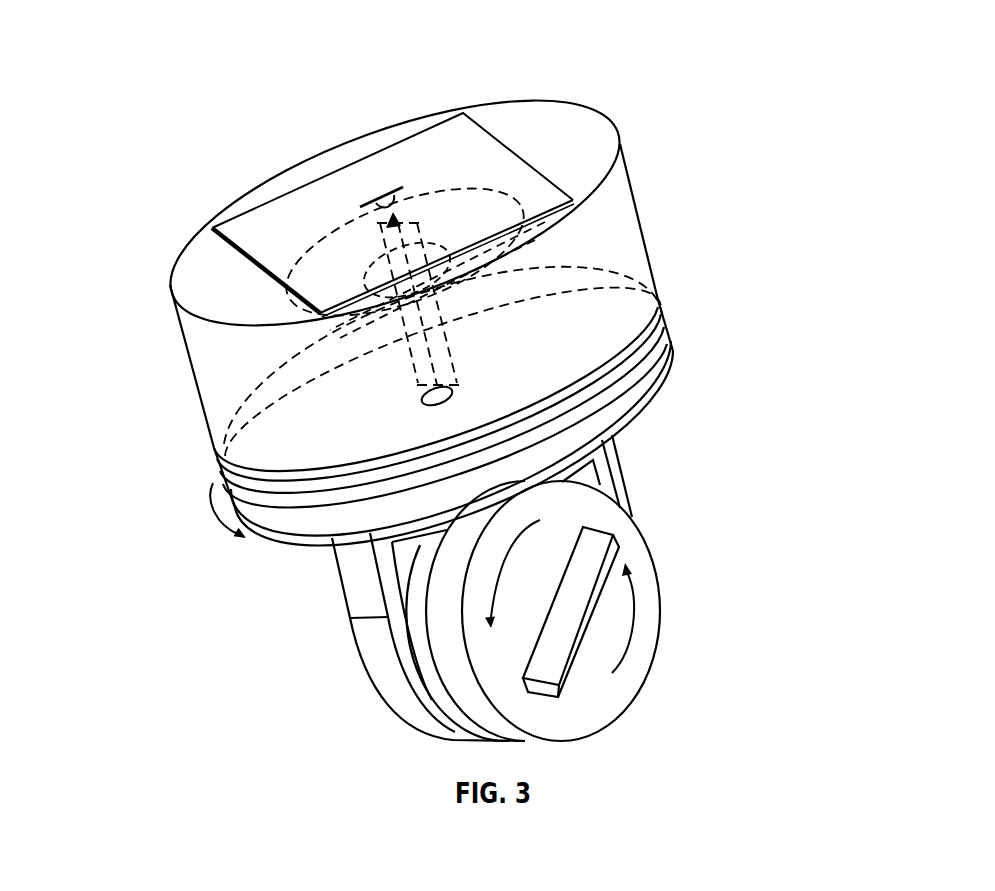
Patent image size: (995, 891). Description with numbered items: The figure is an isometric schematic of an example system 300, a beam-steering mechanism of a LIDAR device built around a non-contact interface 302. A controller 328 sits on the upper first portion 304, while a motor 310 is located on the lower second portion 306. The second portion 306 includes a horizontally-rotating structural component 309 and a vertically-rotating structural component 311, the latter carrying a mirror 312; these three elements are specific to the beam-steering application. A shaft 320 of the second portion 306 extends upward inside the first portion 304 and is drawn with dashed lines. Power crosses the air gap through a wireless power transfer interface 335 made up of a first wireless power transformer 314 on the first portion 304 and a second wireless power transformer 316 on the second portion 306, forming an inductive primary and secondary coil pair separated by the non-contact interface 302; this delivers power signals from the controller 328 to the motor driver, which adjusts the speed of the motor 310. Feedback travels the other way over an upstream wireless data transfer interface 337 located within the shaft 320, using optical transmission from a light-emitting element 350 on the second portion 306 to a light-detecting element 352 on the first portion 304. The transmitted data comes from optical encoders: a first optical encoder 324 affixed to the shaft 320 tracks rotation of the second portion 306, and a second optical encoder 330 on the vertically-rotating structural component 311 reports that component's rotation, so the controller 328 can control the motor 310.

The system 300 is at (650, 47).
The non-contact interface 302 is at (200, 463).
The first portion 304 is at (160, 128).
The second portion 306 is at (160, 478).
The horizontally-rotating structural component 309 is at (645, 428).
The motor 310 is at (665, 697).
The vertically-rotating structural component 311 is at (675, 545).
The mirror 312 is at (557, 690).
The first wireless power transformer 314 is at (653, 313).
The second wireless power transformer 316 is at (647, 367).
The shaft 320 is at (457, 370).
The first optical encoder 324 is at (462, 208).
The controller 328 is at (357, 162).
The second optical encoder 330 is at (410, 647).
The wireless power transfer interface 335 is at (663, 322).
The upstream wireless data transfer interface 337 is at (404, 343).
The light-emitting element 350 is at (430, 400).
The light-detecting element 352 is at (375, 201).